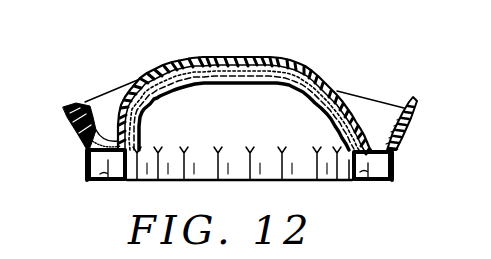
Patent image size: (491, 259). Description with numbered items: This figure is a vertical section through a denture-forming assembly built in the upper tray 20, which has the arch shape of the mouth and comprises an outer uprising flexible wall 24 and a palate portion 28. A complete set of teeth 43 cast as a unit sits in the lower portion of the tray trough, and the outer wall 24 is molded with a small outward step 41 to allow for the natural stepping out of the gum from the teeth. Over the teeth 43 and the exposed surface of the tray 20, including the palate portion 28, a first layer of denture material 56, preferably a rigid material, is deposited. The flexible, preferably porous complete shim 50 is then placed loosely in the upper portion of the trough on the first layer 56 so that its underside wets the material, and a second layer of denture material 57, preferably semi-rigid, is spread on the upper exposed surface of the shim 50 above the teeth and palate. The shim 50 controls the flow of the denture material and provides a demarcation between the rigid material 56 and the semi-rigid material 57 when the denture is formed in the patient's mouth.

The upper tray 20 is at (398, 160).
The outer uprising flexible wall 24 is at (84, 101).
The palate portion 28 is at (260, 58).
The outward step 41 is at (81, 152).
The cast complete set of teeth 43 is at (115, 181).
The complete shim 50 is at (279, 60).
The first layer of denture material 56 is at (329, 92).
The second layer of denture material 57 is at (172, 62).